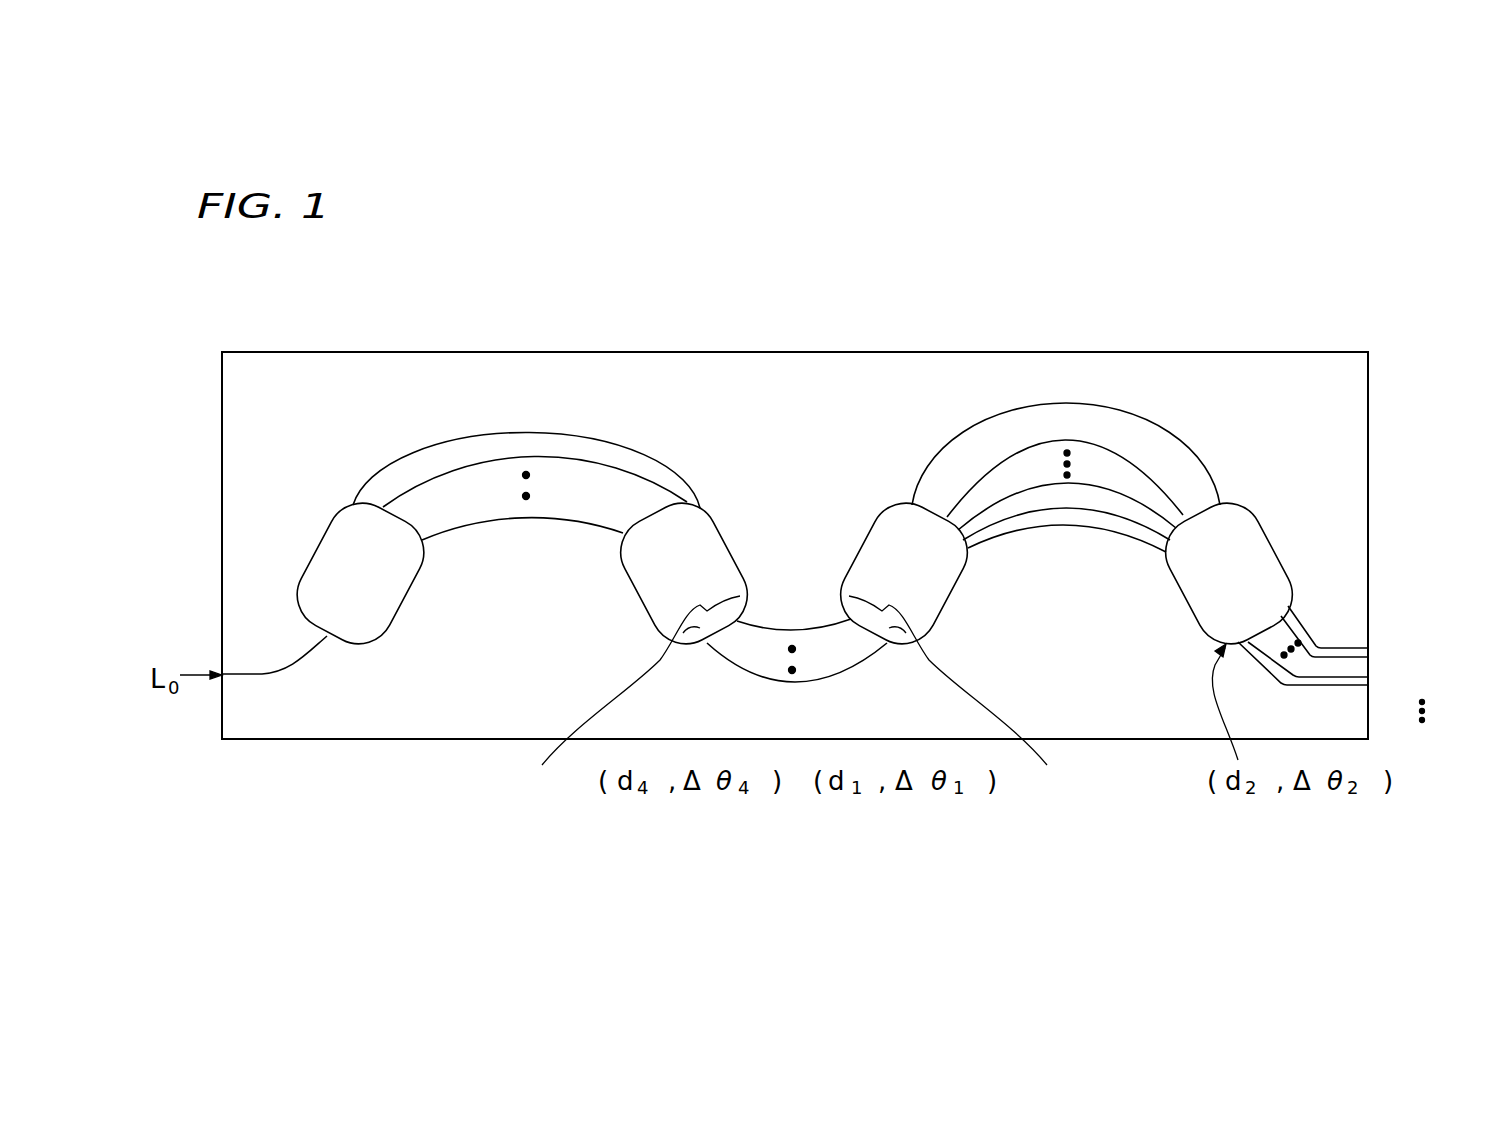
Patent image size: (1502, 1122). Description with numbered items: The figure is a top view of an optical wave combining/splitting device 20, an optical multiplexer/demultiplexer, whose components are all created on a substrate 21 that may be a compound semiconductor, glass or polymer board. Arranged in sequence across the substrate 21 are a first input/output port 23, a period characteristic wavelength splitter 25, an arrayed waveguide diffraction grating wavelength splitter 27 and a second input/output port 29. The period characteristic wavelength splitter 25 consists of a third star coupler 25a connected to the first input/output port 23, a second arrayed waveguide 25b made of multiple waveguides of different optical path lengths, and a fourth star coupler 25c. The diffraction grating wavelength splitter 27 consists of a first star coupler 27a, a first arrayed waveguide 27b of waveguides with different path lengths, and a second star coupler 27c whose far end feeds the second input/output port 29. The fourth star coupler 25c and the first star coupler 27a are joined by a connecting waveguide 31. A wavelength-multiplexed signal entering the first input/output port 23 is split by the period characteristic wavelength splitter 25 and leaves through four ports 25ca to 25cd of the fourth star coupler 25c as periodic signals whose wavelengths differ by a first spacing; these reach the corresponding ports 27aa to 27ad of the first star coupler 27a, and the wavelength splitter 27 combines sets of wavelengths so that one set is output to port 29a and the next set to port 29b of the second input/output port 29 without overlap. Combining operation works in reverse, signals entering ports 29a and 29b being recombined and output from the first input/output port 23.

The optical wave combining/splitting device 20 is at (1278, 352).
The substrate 21 is at (1338, 385).
The first input/output port 23 is at (222, 672).
The period characteristic wavelength splitter 25 is at (657, 298).
The third star coupler 25a is at (335, 553).
The second arrayed waveguide 25b is at (515, 537).
The fourth star coupler 25c is at (705, 550).
The port of the fourth star coupler 25ca is at (586, 696).
The port of the fourth star coupler 25cd is at (645, 765).
The arrayed waveguide diffraction grating wavelength splitter 27 is at (1183, 298).
The first star coupler 27a is at (865, 553).
The first arrayed waveguide 27b is at (1065, 553).
The second star coupler 27c is at (1233, 550).
The port of the first star coupler 27aa is at (1004, 696).
The port of the first star coupler 27ad is at (912, 762).
The second input/output port 29 is at (1367, 674).
The port of the second input/output port 29a is at (1343, 648).
The port of the second input/output port 29b is at (1343, 657).
The connecting waveguide 31 is at (847, 680).